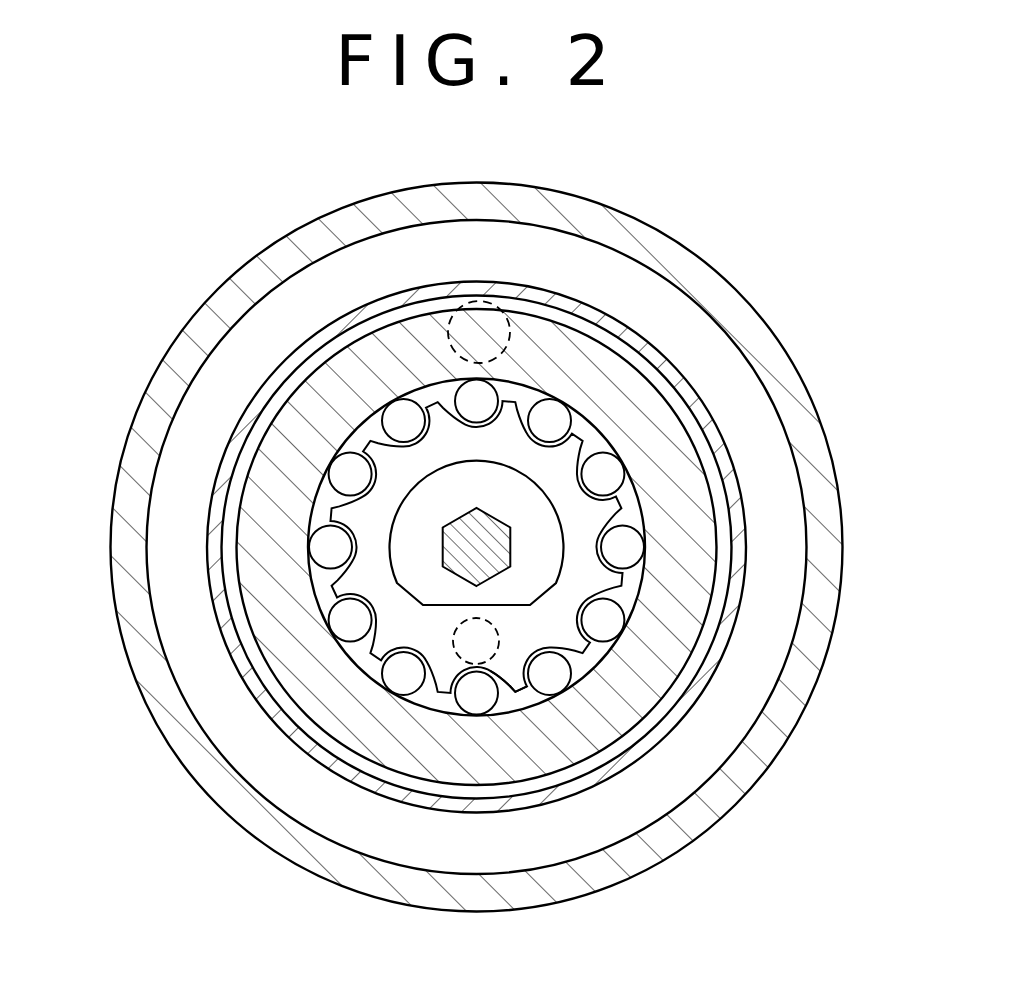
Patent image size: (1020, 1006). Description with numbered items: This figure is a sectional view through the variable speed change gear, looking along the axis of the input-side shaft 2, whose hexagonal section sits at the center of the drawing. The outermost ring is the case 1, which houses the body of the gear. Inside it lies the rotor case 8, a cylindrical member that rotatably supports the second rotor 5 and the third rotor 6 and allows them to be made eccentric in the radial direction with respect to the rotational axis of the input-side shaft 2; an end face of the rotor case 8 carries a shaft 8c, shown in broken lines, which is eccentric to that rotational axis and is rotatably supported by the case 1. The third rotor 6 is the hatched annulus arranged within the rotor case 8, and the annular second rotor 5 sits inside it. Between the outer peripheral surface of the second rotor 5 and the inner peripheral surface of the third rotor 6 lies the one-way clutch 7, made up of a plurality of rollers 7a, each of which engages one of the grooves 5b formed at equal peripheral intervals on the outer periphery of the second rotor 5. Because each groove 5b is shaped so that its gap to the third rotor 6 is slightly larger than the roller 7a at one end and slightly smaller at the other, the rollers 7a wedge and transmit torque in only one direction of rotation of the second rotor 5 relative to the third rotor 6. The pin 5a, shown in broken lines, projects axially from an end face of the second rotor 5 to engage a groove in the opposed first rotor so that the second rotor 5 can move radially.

The case 1 is at (228, 276).
The input-side shaft 2 is at (486, 550).
The second rotor 5 is at (353, 572).
The pin 5a is at (482, 640).
The groove 5b is at (495, 695).
The third rotor 6 is at (332, 712).
The one-way clutch 7 is at (592, 668).
The roller 7a is at (390, 680).
The rotor case 8 is at (247, 405).
The shaft 8c is at (505, 312).